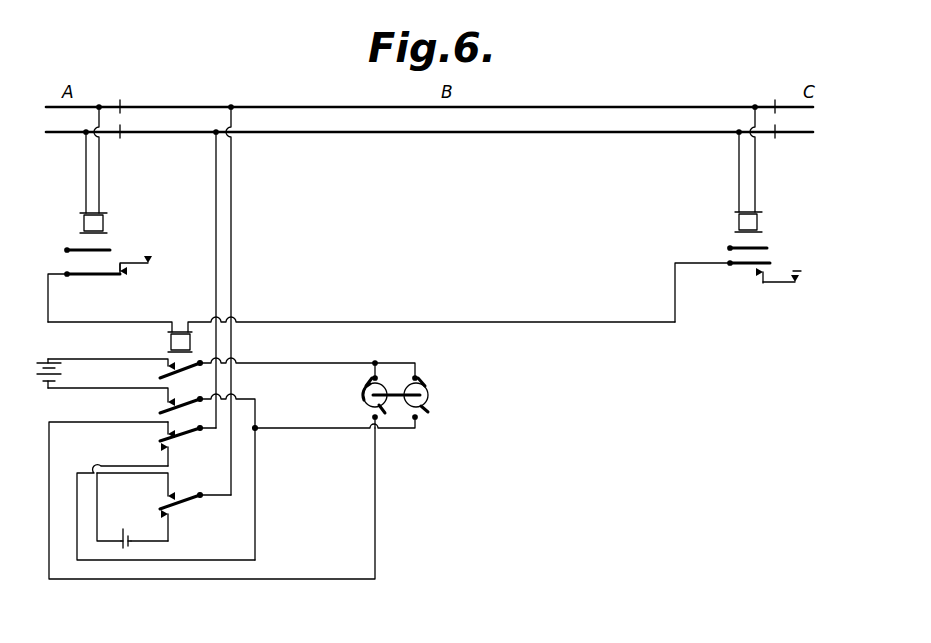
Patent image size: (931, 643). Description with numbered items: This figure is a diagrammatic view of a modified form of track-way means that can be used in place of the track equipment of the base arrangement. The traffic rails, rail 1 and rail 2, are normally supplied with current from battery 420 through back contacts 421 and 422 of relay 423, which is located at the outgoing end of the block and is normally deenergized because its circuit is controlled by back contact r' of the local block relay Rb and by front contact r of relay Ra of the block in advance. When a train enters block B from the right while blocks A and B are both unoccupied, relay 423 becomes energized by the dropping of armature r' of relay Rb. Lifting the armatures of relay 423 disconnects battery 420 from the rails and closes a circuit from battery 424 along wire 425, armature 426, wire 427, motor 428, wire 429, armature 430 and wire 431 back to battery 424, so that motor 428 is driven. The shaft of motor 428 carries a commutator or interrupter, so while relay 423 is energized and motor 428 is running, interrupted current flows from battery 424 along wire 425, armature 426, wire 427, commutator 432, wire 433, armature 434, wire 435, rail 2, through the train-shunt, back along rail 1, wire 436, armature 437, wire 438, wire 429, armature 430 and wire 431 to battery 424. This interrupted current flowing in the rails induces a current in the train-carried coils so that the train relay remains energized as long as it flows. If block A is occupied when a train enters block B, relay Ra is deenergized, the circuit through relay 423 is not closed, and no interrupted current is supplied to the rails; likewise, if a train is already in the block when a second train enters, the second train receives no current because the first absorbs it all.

The rail 1 is at (566, 107).
The rail 2 is at (563, 133).
The relay of the block in advance Ra is at (82, 170).
The local block relay Rb is at (735, 170).
The front contact r is at (101, 283).
The back contact r' is at (738, 284).
The battery 420 is at (135, 547).
The back contact 421 is at (174, 511).
The back contact 422 is at (172, 441).
The relay 423 is at (171, 344).
The battery 424 is at (62, 372).
The wire 425 is at (80, 359).
The armature 426 is at (165, 373).
The wire 427 is at (326, 358).
The motor 428 is at (429, 392).
The wire 429 is at (402, 430).
The armature 430 is at (165, 408).
The wire 431 is at (48, 389).
The commutator 432 is at (366, 402).
The wire 433 is at (377, 546).
The armature 434 is at (164, 436).
The wire 435 is at (215, 220).
The wire 436 is at (233, 219).
The armature 437 is at (186, 497).
The wire 438 is at (77, 472).